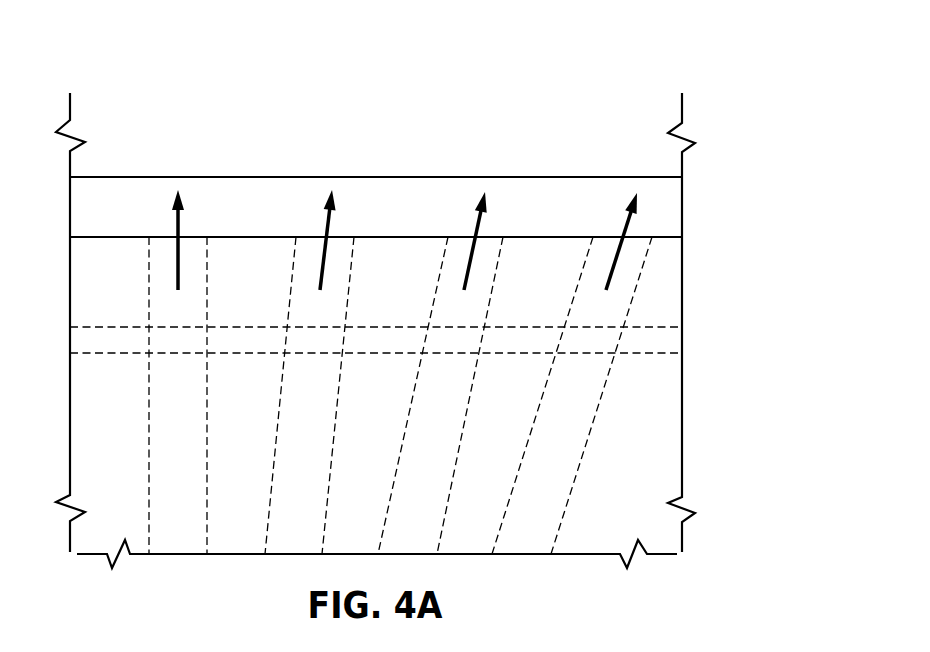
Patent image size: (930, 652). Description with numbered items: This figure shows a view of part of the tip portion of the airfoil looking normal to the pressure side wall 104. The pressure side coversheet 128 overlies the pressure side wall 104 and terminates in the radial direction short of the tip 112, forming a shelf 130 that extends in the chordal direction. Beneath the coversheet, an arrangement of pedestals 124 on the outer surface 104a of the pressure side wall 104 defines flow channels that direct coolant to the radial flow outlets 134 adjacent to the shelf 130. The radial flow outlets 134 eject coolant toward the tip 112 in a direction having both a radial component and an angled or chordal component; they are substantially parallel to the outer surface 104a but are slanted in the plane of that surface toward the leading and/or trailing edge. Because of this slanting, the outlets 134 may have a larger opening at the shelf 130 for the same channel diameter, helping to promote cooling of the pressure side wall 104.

The tip 112 is at (564, 44).
The pressure side wall 104 is at (264, 176).
The outer surface 104a is at (454, 186).
The shelf 130 is at (252, 236).
The pressure side coversheet 128 is at (559, 246).
The pedestals 124 is at (526, 325).
The radial flow outlets 134 is at (164, 252).